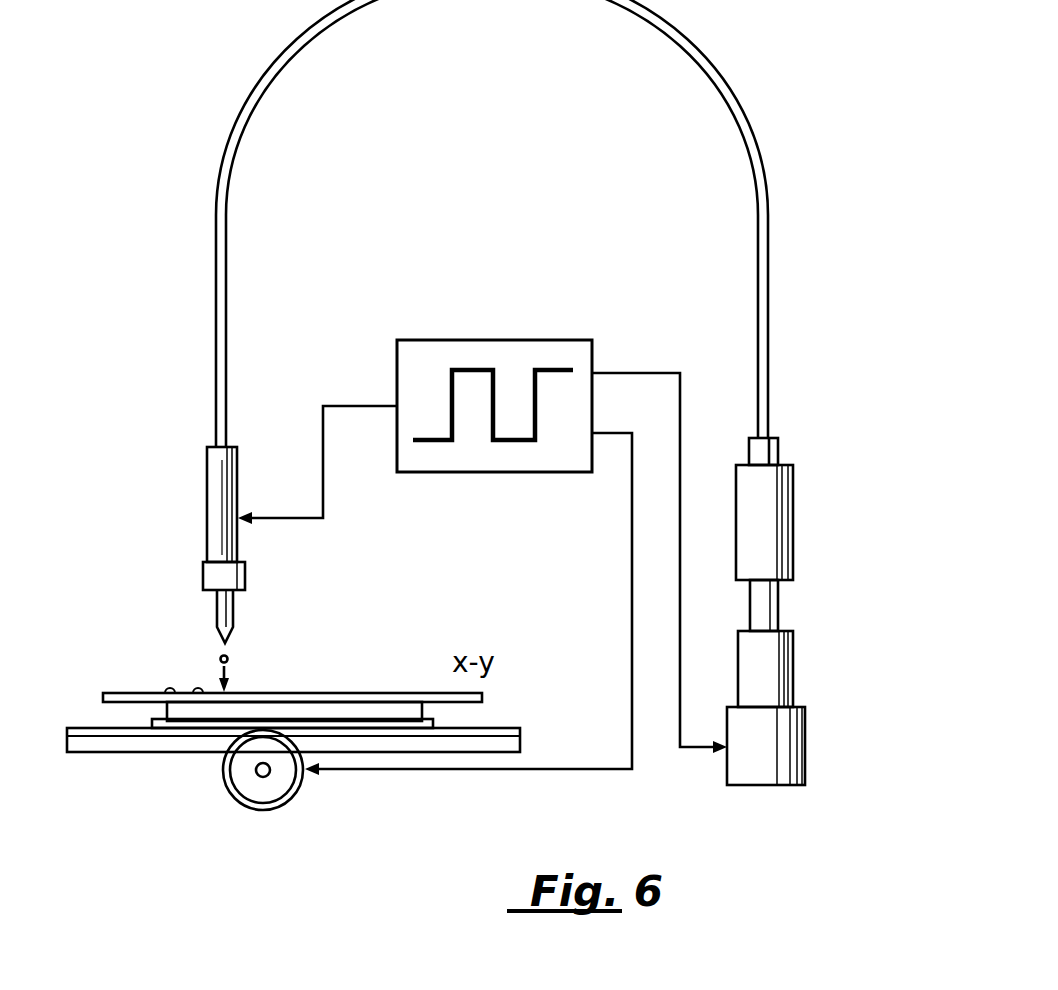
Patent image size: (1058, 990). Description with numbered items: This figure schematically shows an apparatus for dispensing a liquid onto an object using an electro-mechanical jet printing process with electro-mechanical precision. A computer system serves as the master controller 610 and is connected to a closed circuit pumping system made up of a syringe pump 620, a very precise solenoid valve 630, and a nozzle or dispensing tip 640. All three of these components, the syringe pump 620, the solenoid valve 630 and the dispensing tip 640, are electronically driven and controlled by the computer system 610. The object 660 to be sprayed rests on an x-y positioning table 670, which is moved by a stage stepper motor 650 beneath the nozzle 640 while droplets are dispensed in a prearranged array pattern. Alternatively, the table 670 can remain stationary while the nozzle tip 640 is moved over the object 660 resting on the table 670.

The master controller 610 is at (515, 358).
The syringe pump 620 is at (786, 735).
The solenoid valve 630 is at (216, 490).
The nozzle or dispensing tip 640 is at (222, 648).
The stage stepper motor 650 is at (268, 790).
The object 660 is at (350, 692).
The x-y positioning table 670 is at (197, 717).